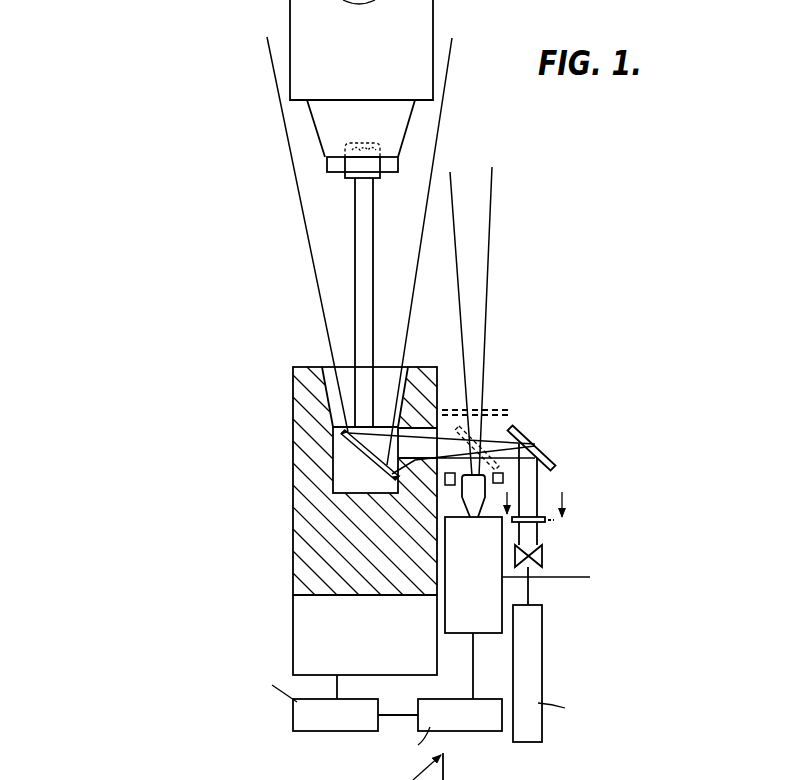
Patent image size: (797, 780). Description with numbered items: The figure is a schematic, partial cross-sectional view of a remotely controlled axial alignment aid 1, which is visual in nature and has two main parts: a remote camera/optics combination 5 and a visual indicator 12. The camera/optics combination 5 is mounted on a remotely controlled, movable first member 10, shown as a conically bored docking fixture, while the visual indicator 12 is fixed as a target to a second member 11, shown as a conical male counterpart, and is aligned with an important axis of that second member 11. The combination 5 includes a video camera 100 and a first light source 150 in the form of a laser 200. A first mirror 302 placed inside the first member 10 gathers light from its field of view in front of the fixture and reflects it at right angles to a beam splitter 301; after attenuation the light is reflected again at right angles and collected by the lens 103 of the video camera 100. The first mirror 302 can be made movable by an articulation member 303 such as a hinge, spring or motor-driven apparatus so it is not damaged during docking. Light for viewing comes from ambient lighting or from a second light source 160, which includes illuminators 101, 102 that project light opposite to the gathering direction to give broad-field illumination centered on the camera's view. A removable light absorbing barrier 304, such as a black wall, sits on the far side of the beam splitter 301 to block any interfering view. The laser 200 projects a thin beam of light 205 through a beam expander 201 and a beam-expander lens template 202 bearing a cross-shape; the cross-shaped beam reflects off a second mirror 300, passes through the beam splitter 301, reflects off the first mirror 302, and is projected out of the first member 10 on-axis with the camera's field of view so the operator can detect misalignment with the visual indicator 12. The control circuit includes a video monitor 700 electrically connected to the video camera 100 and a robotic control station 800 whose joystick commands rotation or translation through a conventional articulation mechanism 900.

The axial alignment aid 1 is at (235, 327).
The remote camera/optics combination 5 is at (267, 557).
The first member 10 is at (297, 447).
The second member 11 is at (422, 18).
The visual indicator 12 is at (408, 158).
The video camera 100 is at (578, 553).
The illuminator 101 is at (500, 463).
The illuminator 102 is at (450, 487).
The lens 103 is at (474, 507).
The first light source 150 is at (565, 673).
The second light source 160 is at (526, 482).
The laser 200 is at (538, 690).
The beam expander 201 is at (543, 557).
The beam-expander lens template 202 is at (545, 523).
The thin beam of light 205 is at (355, 252).
The second mirror 300 is at (545, 450).
The beam splitter 301 is at (477, 445).
The first mirror 302 is at (350, 446).
The articulation member 303 is at (399, 478).
The light absorbing barrier 304 is at (492, 410).
The video monitor 700 is at (475, 723).
The robotic control station 800 is at (303, 717).
The articulation mechanism 900 is at (303, 640).